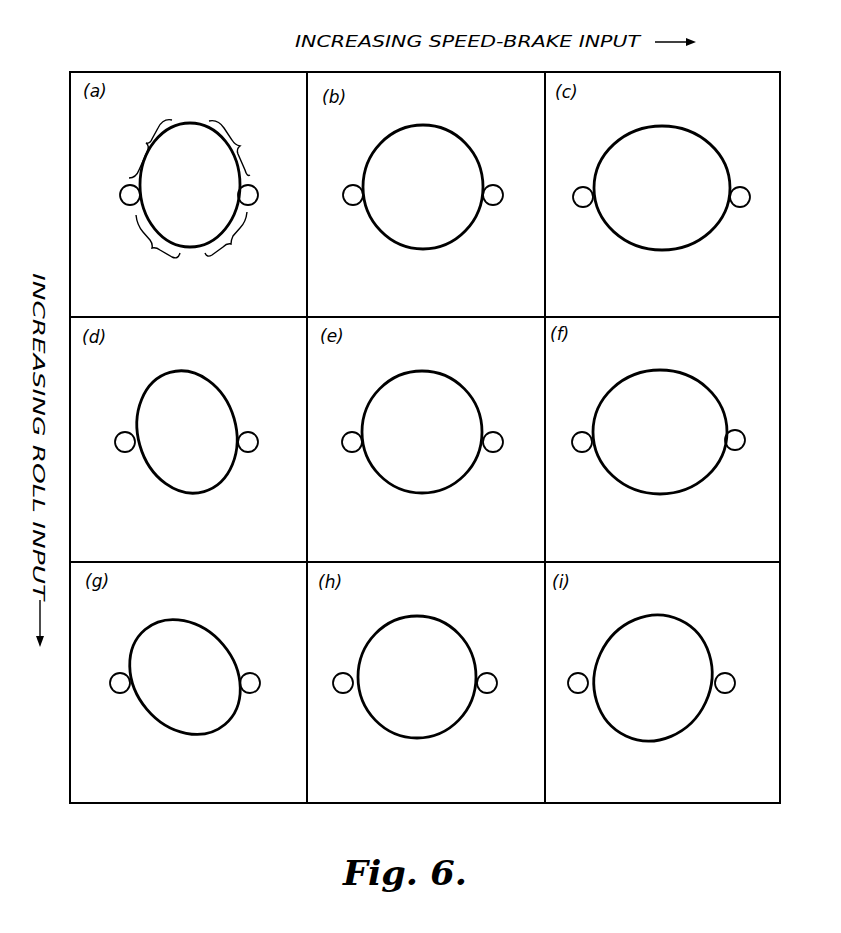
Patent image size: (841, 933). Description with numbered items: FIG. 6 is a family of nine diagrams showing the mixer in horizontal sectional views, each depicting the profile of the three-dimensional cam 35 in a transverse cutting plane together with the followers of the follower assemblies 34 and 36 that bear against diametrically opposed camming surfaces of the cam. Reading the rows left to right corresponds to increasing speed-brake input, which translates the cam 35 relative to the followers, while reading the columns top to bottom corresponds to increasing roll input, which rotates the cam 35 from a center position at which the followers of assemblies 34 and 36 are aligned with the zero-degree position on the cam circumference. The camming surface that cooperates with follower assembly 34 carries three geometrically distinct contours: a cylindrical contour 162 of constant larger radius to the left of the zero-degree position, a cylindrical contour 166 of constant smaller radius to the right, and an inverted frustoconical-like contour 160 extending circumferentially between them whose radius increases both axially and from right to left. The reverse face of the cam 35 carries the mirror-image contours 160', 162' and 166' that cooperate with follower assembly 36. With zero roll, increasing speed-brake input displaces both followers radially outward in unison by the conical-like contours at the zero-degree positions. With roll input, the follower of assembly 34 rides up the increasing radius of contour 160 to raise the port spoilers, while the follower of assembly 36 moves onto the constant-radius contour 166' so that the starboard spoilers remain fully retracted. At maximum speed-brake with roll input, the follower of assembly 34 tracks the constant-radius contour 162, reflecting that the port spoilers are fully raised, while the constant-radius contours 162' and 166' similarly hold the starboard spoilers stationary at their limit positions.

The follower assembly 34 is at (122, 203).
The three-dimensional cam 35 is at (222, 113).
The follower assembly 36 is at (259, 200).
The contour 160 is at (342, 445).
The contour 160' is at (489, 384).
The contour 162 is at (486, 425).
The contour 162' is at (598, 121).
The contour 166 is at (265, 248).
The contour 166' is at (486, 487).